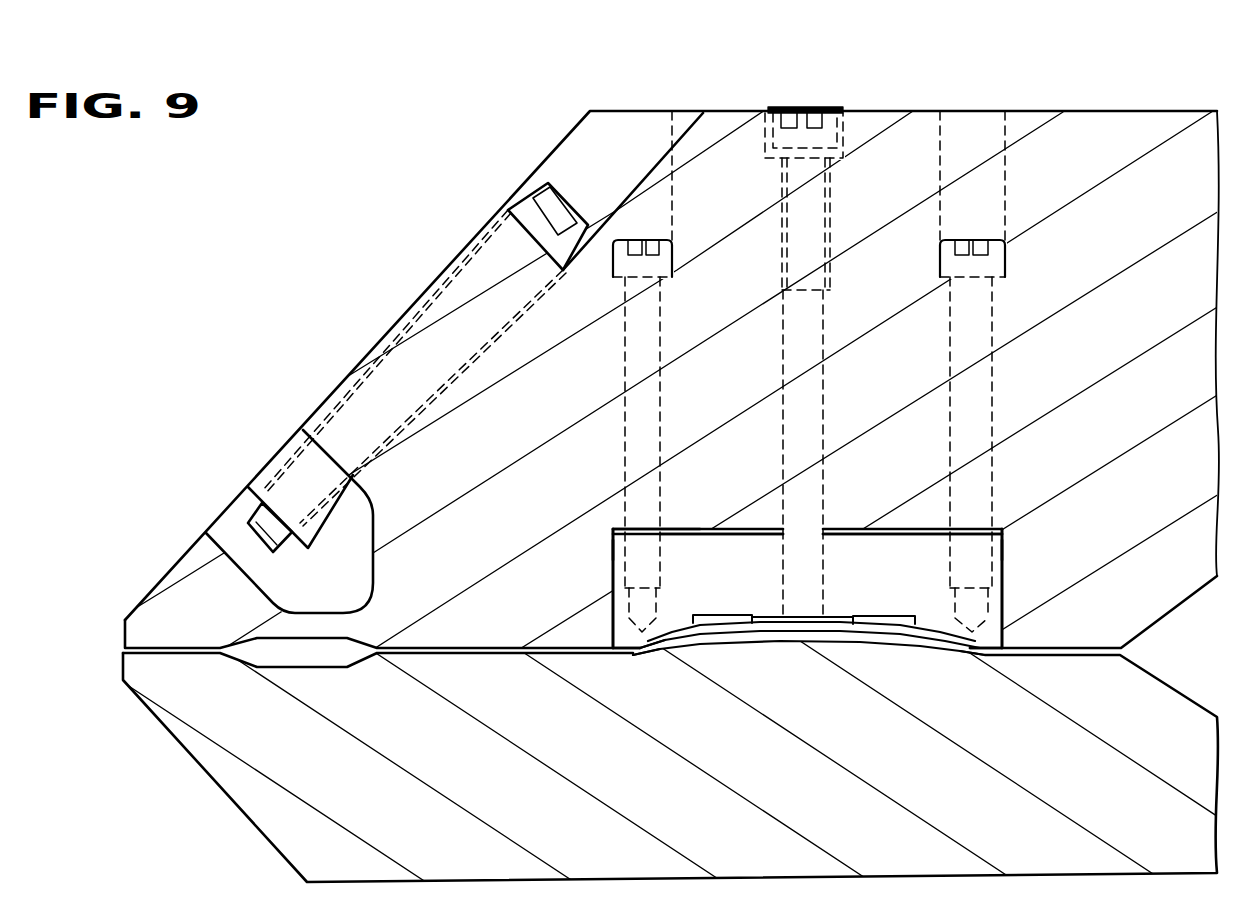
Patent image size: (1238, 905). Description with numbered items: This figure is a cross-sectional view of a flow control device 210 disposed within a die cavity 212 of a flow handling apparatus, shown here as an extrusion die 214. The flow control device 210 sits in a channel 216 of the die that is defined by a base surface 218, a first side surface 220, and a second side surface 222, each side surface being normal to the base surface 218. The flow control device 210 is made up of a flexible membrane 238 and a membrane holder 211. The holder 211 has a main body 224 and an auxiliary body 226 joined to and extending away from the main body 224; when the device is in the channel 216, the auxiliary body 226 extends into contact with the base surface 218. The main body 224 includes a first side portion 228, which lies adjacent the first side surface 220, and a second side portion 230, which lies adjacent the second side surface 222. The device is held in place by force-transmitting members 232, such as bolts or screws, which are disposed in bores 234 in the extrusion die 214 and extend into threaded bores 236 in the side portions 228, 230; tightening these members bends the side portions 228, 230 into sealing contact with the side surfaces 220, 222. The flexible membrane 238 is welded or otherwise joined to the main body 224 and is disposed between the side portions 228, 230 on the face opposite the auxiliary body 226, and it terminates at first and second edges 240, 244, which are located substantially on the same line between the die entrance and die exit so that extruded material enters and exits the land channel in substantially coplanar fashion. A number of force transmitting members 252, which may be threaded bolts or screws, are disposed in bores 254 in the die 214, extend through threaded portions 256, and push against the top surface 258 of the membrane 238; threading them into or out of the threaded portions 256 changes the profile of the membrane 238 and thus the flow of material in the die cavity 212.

The flow control device 210 is at (918, 581).
The membrane holder 211 is at (850, 593).
The die cavity 212 is at (950, 650).
The extrusion die 214 is at (793, 789).
The channel 216 is at (1004, 531).
The base surface 218 is at (677, 522).
The first side surface 220 is at (612, 567).
The second side surface 222 is at (1003, 585).
The main body 224 is at (690, 548).
The auxiliary body 226 is at (843, 538).
The first side portion 228 is at (613, 628).
The second side portion 230 is at (1003, 637).
The force-transmitting members 232 is at (632, 245).
The bores 234 is at (662, 165).
The threaded bores 236 is at (612, 528).
The flexible membrane 238 is at (650, 650).
The first edge 240 is at (1000, 653).
The second edge 244 is at (615, 648).
The force transmitting members 252 is at (806, 106).
The bores 254 is at (846, 150).
The threaded portions 256 is at (832, 292).
The top surface 258 is at (771, 613).